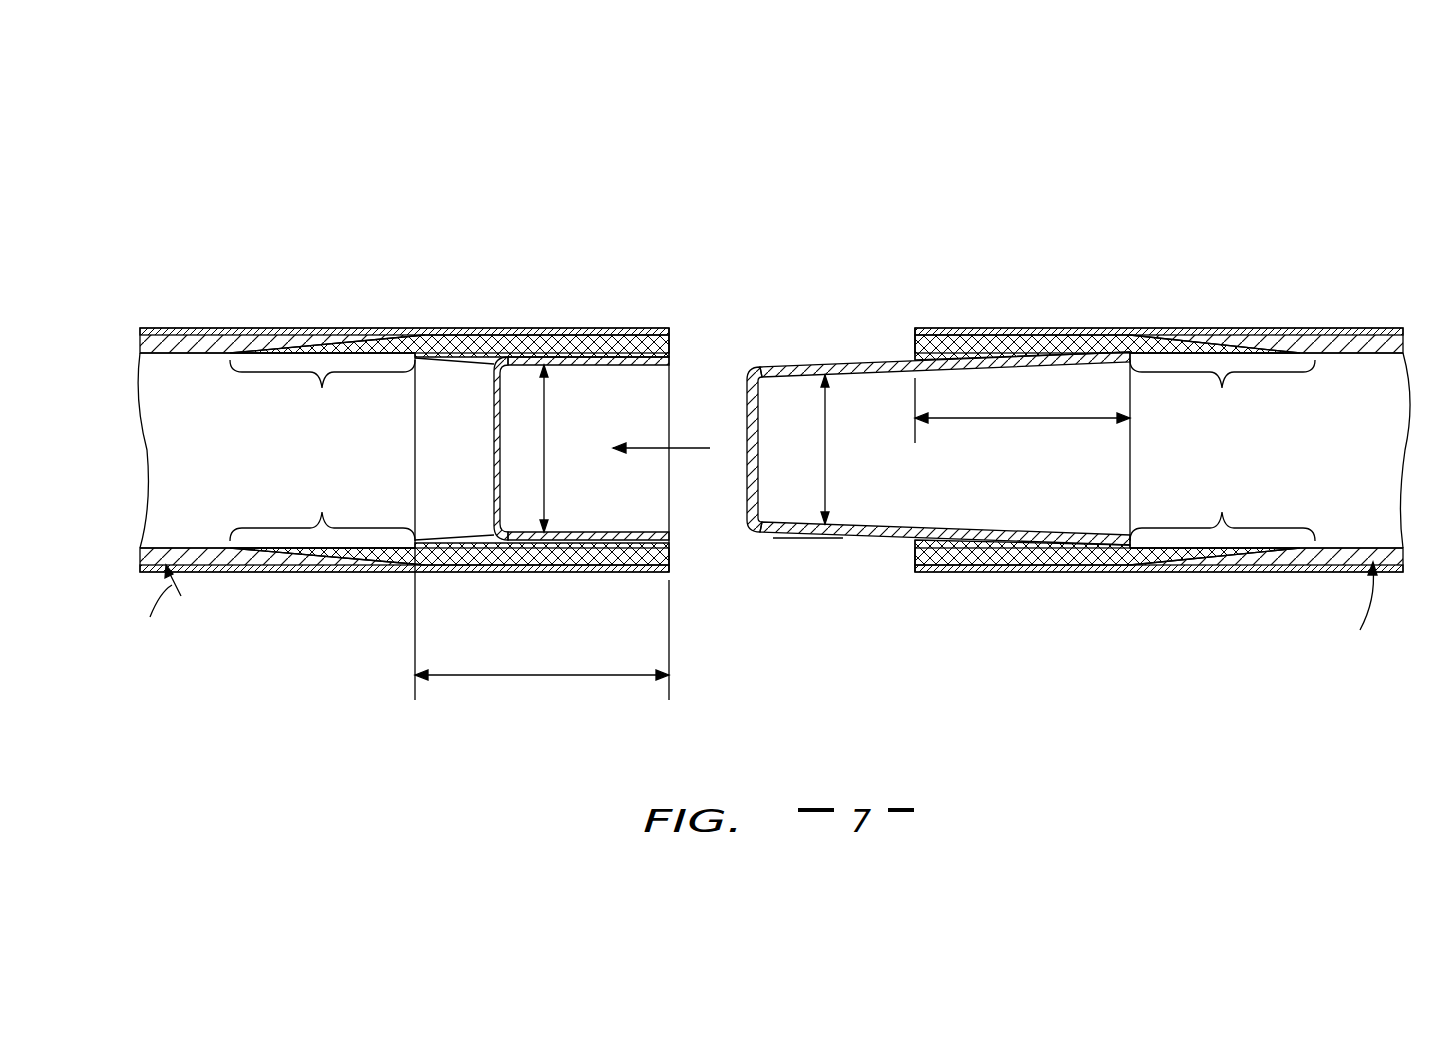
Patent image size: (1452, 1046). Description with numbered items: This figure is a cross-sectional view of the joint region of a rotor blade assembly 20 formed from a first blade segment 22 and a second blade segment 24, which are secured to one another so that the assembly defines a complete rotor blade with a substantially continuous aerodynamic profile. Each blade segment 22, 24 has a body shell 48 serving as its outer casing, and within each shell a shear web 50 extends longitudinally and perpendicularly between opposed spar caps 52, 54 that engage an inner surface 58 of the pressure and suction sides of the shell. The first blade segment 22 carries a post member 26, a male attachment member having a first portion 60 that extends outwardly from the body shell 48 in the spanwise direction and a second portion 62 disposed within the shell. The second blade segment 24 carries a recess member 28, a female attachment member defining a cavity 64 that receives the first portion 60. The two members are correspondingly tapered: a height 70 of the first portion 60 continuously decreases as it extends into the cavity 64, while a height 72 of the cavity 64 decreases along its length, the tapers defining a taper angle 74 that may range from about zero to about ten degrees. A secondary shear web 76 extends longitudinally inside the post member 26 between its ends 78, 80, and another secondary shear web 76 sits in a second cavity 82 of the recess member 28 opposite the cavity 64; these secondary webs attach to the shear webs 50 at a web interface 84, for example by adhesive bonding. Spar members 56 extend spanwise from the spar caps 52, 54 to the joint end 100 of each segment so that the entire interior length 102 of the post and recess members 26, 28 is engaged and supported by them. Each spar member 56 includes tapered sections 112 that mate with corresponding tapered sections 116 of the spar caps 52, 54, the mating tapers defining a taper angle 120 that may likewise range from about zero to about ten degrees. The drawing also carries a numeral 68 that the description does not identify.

The rotor blade assembly 20 is at (360, 188).
The first blade segment 22 is at (1118, 311).
The second blade segment 24 is at (381, 306).
The post member 26 is at (873, 358).
The recess member 28 is at (625, 357).
The body shell 48 is at (257, 328).
The shear web 50 is at (158, 418).
The spar cap 52 is at (122, 338).
The spar cap 54 is at (197, 546).
The spar member 56 is at (545, 340).
The inner surface 58 is at (307, 330).
The first portion 60 is at (840, 365).
The second portion 62 is at (1068, 348).
The cavity 64 is at (653, 470).
The spigot outer wall 68 is at (570, 535).
The height 70 is at (828, 470).
The height 72 is at (547, 443).
The taper angle 74 is at (802, 483).
The secondary shear web 76 is at (470, 504).
The end 78 is at (748, 405).
The end 80 is at (1170, 557).
The second cavity 82 is at (458, 575).
The web interface 84 is at (415, 487).
The joint end 100 is at (668, 346).
The interior length 102 is at (540, 678).
The tapered section 112 is at (772, 450).
The tapered section 116 is at (772, 450).
The taper angle 120 is at (749, 615).